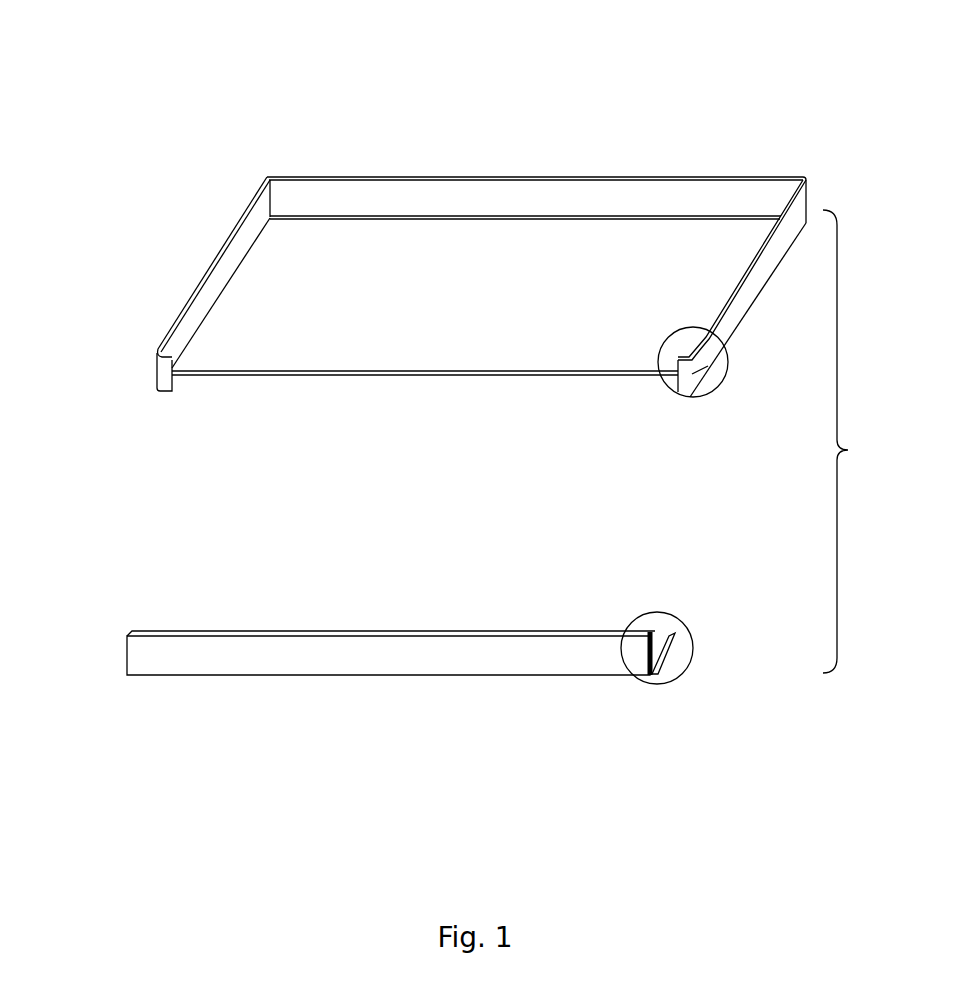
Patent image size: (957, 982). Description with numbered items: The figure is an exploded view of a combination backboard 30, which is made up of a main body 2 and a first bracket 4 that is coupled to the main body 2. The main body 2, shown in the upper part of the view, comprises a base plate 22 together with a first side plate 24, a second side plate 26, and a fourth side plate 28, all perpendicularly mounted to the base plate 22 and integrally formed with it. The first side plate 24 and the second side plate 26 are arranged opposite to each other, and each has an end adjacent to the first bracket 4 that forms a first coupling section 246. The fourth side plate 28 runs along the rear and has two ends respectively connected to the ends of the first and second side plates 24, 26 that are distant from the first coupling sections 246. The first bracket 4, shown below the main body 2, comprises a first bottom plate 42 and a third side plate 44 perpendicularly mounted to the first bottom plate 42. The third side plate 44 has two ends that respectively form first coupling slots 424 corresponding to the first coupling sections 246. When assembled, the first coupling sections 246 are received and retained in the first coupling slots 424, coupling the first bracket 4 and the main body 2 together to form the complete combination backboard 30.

The main body 2 is at (157, 238).
The base plate 22 is at (415, 330).
The first side plate 24 is at (228, 268).
The second side plate 26 is at (765, 270).
The fourth side plate 28 is at (597, 197).
The first coupling section 246 is at (685, 392).
The combination backboard 30 is at (860, 441).
The first bracket 4 is at (105, 617).
The first bottom plate 42 is at (675, 633).
The first coupling slot 424 is at (648, 632).
The third side plate 44 is at (307, 653).